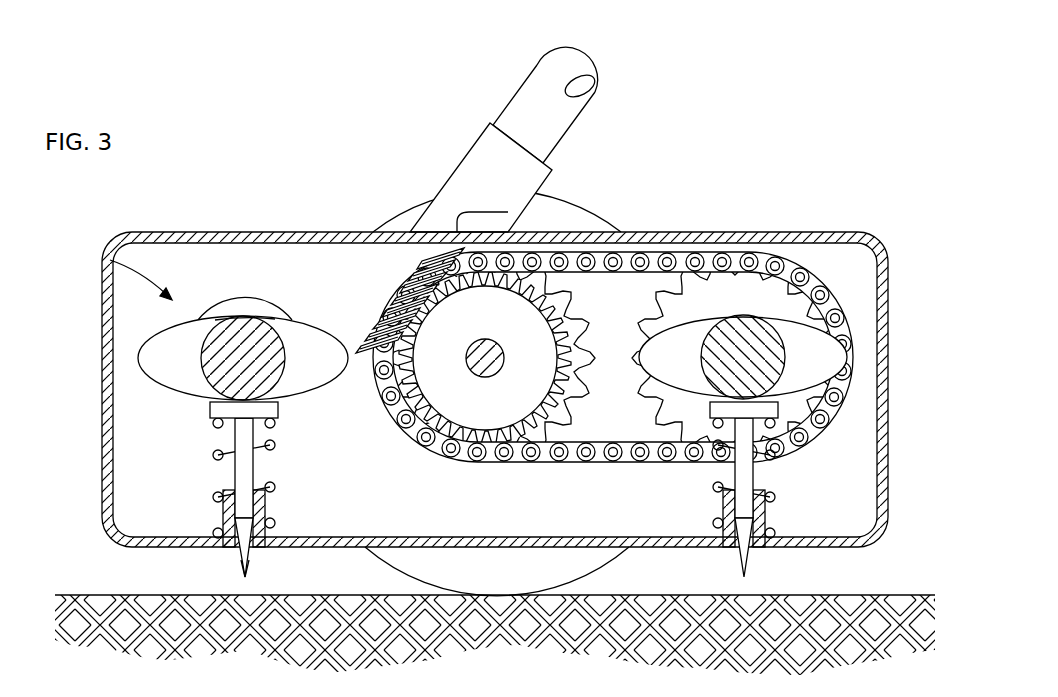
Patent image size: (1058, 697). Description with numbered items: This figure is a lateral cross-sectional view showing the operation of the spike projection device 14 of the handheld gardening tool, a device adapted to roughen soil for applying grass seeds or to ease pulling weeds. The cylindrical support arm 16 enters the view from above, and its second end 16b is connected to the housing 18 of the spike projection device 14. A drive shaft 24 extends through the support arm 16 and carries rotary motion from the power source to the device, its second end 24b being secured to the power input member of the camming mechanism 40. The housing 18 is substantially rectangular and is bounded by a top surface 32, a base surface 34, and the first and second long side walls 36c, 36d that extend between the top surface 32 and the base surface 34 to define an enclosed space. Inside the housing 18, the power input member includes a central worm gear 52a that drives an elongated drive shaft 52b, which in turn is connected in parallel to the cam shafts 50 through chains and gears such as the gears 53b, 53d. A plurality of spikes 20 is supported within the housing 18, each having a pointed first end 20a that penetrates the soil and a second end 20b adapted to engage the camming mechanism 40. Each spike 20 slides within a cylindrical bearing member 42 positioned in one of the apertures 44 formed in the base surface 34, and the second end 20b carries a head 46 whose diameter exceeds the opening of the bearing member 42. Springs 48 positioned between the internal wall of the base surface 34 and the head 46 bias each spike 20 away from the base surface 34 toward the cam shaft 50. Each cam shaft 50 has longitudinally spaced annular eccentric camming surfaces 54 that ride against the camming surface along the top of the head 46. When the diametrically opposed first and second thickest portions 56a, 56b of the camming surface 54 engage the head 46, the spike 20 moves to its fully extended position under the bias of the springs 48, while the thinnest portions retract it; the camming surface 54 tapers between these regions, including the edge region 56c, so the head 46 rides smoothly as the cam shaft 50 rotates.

The spike projection device 14 is at (239, 232).
The support arm 16 is at (525, 91).
The second end 16b is at (498, 121).
The housing 18 is at (853, 231).
The spikes 20 is at (240, 557).
The pointed first end 20a is at (238, 580).
The second end 20b is at (283, 420).
The drive shaft 24 is at (512, 212).
The second end 24b is at (403, 285).
The top surface 32 is at (738, 232).
The base surface 34 is at (320, 548).
The first long side wall 36c is at (102, 405).
The second long side wall 36d is at (890, 450).
The camming mechanism 40 is at (104, 250).
The cylindrical bearing member 42 is at (223, 515).
The apertures 44 is at (235, 560).
The head 46 is at (210, 410).
The springs 48 is at (270, 518).
The cam shaft 50 is at (263, 347).
The central worm gear 52a is at (540, 335).
The elongated drive shaft 52b is at (475, 373).
The gear 53b is at (563, 408).
The gear 53d is at (710, 292).
The annular eccentric camming surface 54 is at (158, 333).
The first thickest portion 56a is at (137, 358).
The second thickest portion 56b is at (350, 356).
The cam edge 56c is at (243, 320).